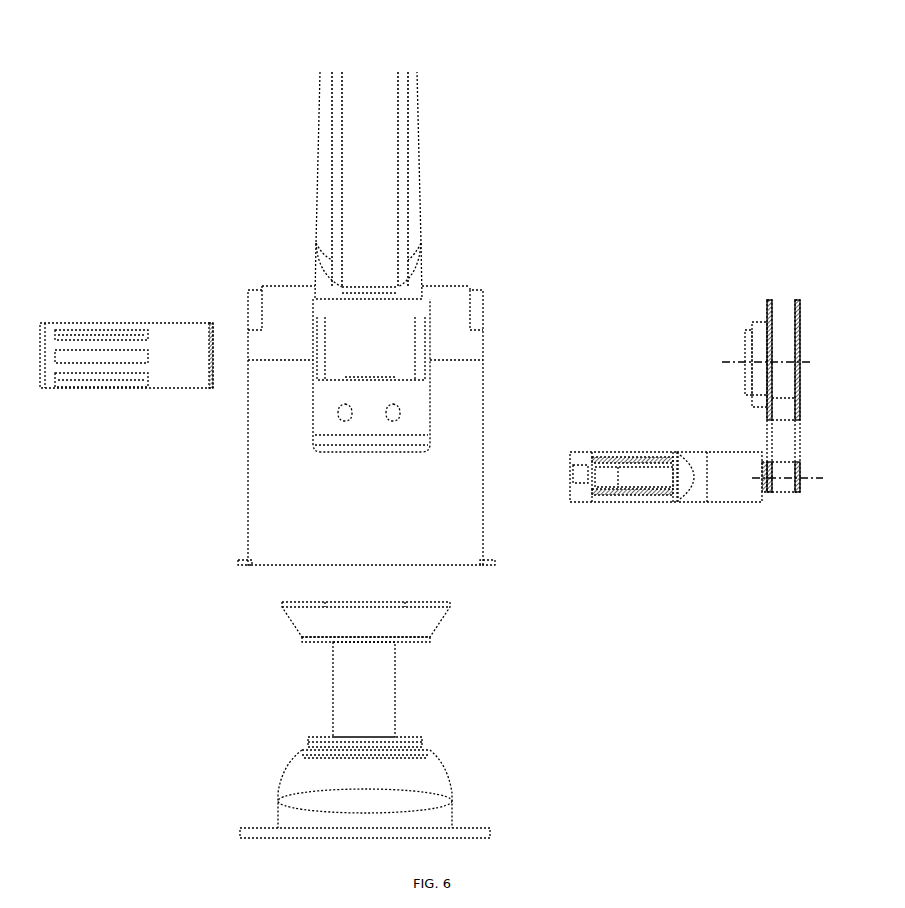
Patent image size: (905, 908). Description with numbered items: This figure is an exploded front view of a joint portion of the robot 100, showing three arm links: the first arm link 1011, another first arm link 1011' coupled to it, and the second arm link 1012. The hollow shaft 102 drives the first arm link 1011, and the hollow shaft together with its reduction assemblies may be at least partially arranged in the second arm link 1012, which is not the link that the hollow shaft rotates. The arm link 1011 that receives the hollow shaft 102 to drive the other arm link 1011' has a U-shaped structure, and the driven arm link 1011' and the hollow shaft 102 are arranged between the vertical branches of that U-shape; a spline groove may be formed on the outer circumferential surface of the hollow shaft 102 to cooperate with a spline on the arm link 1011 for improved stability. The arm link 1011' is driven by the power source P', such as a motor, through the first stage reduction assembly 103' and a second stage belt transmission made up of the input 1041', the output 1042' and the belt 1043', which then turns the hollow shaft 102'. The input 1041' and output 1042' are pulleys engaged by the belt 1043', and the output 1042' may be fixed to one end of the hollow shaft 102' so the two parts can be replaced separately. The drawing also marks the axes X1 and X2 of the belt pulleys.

The robot 100 is at (446, 70).
The first arm link 1011 is at (351, 425).
The first arm link 1011' is at (340, 185).
The hollow shaft 102' is at (137, 346).
The hollow shaft 102 is at (366, 674).
The second arm link 1012 is at (302, 782).
The belt 1043' is at (807, 390).
The output 1042' is at (730, 359).
The input 1041' is at (811, 476).
The first stage reduction assembly 103' is at (721, 468).
The power source P' is at (624, 468).
The axis X1 is at (774, 371).
The axis X2 is at (788, 488).